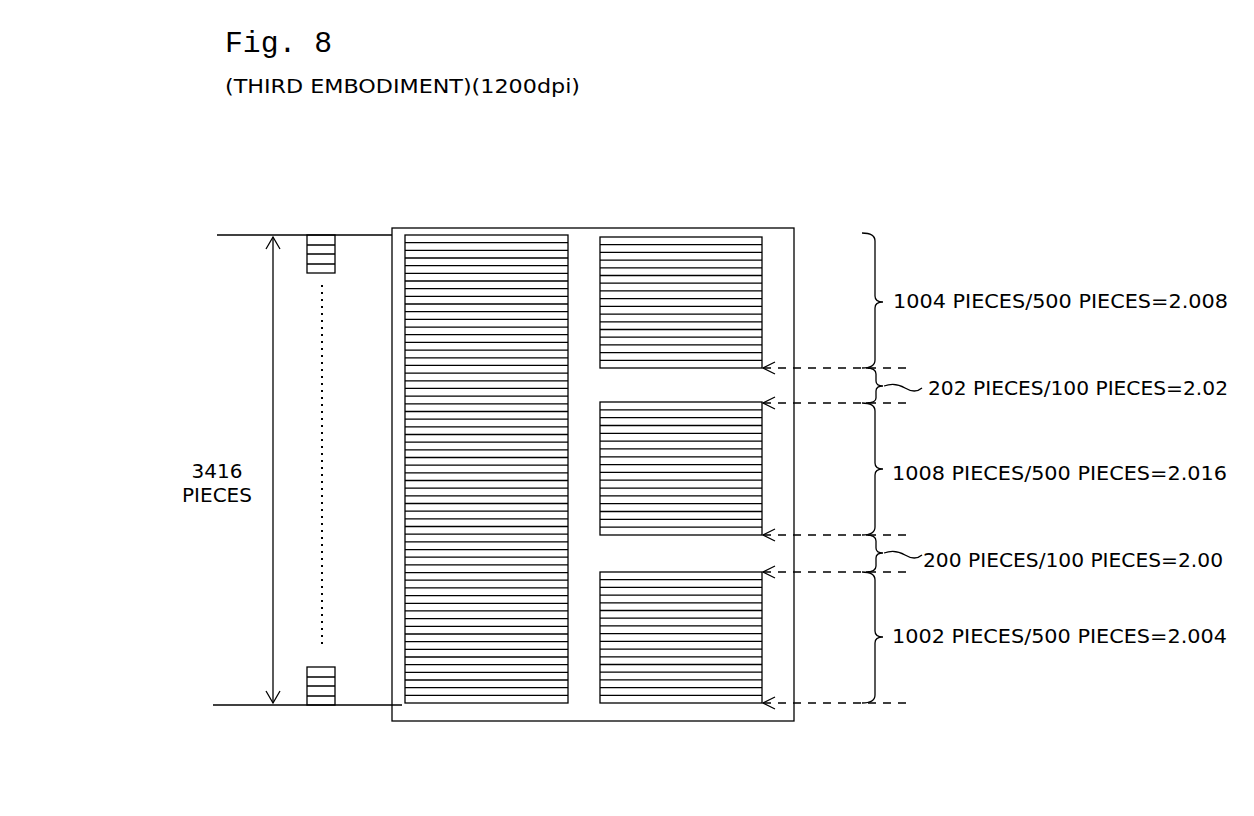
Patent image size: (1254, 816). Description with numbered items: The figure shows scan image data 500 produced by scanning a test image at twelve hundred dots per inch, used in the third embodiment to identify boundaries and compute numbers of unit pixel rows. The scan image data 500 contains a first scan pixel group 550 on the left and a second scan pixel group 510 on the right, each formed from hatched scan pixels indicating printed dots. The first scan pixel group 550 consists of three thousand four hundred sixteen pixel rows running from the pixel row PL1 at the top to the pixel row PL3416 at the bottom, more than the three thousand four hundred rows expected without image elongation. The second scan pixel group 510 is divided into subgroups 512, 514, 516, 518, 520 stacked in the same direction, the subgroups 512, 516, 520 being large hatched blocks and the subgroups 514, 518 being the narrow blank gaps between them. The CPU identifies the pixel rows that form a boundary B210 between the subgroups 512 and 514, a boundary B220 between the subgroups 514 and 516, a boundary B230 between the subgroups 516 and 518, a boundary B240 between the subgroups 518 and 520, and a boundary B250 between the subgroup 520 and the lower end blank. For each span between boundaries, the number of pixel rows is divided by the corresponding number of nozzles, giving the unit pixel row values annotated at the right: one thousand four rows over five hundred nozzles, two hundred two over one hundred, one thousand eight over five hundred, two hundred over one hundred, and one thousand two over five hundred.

The scan image data 500 is at (795, 202).
The first scan pixel group 550 is at (575, 225).
The second scan pixel group 510 is at (765, 225).
The subgroup 512 is at (771, 286).
The subgroup 514 is at (761, 391).
The subgroup 516 is at (771, 481).
The subgroup 518 is at (761, 559).
The subgroup 520 is at (771, 627).
The boundary B210 is at (885, 368).
The boundary B220 is at (885, 403).
The boundary B230 is at (885, 535).
The boundary B240 is at (885, 572).
The boundary B250 is at (865, 705).
The pixel row PL1 is at (320, 234).
The pixel row PL3416 is at (313, 705).